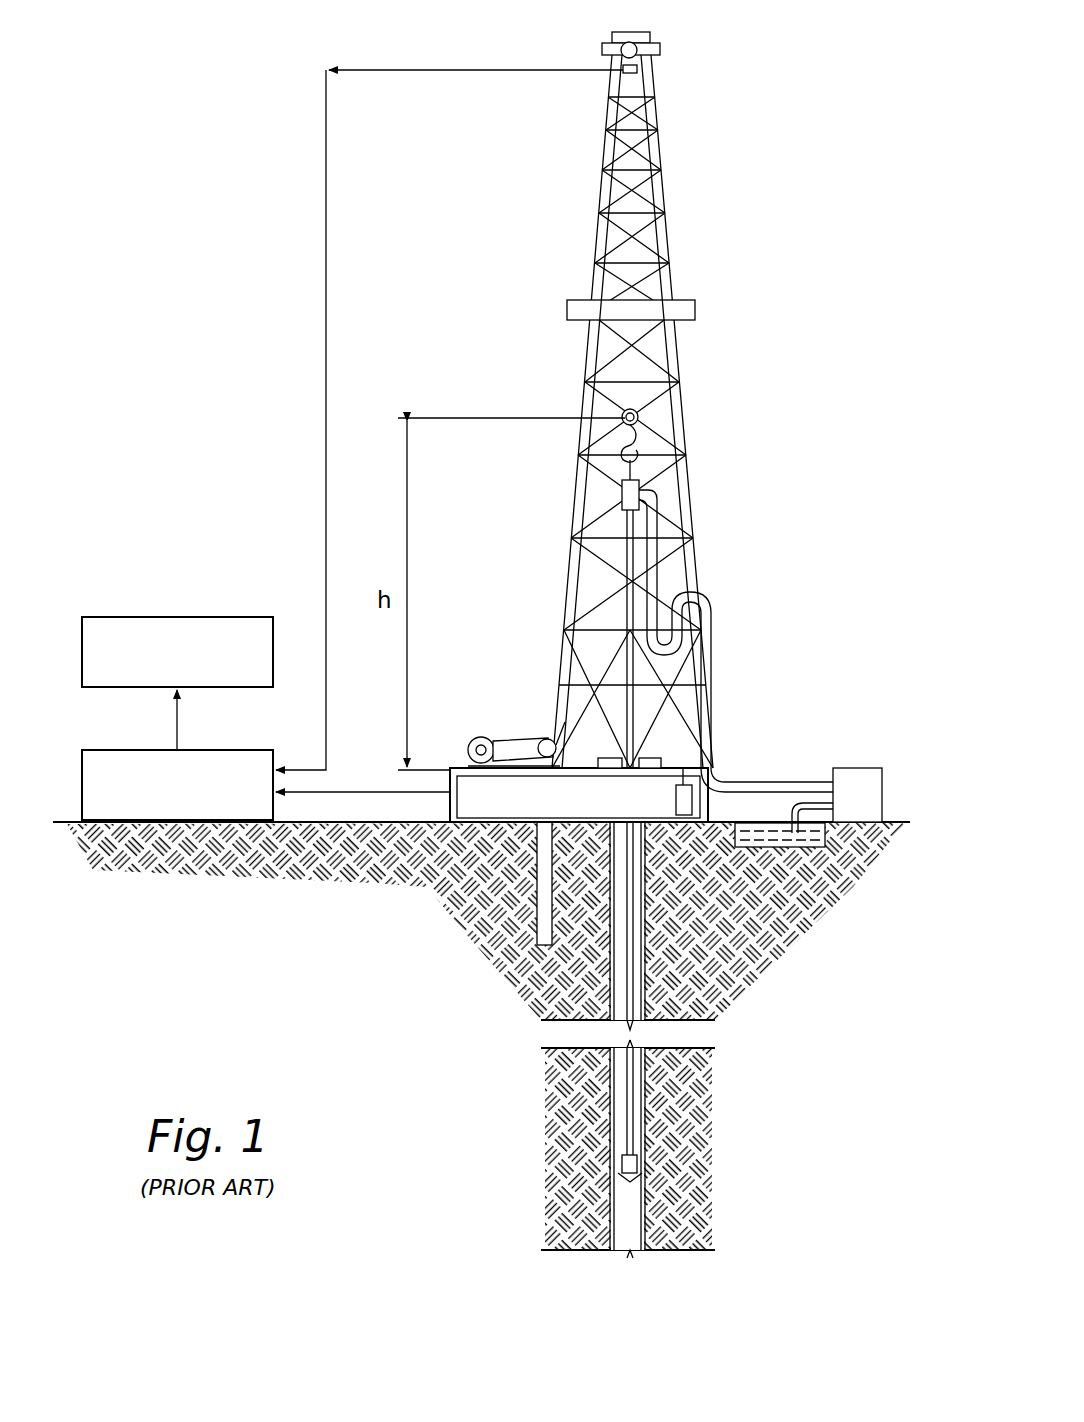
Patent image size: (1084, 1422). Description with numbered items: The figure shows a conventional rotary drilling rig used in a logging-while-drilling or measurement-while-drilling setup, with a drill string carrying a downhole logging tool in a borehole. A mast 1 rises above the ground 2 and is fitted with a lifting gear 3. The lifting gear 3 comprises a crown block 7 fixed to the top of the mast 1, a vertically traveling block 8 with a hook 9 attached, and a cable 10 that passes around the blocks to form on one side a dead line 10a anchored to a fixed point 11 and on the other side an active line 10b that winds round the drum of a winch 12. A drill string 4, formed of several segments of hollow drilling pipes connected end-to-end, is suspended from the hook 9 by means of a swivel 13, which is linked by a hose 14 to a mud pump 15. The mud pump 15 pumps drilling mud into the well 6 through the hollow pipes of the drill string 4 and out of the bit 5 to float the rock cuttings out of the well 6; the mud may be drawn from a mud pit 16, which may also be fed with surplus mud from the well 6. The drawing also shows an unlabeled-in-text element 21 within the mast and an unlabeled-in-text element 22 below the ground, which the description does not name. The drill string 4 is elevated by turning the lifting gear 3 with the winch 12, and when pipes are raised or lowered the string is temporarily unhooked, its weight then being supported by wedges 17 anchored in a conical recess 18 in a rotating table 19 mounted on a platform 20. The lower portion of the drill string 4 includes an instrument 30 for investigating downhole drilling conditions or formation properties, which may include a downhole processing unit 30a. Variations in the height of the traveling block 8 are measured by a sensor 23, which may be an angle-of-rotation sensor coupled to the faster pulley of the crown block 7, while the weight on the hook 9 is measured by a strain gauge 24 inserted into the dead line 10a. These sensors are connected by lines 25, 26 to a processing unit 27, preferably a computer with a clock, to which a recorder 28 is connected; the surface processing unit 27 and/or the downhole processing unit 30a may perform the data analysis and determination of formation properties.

The mast 1 is at (681, 360).
The ground 2 is at (486, 826).
The lifting gear 3 is at (622, 375).
The drill string 4 is at (633, 1073).
The bit 5 is at (629, 1163).
The well 6 is at (633, 1222).
The crown block 7 is at (624, 44).
The traveling block 8 is at (621, 414).
The hook 9 is at (614, 447).
The cable 10 is at (656, 255).
The dead line 10a is at (680, 572).
The active line 10b is at (582, 566).
The fixed point 11 is at (684, 824).
The winch 12 is at (516, 740).
The swivel 13 is at (621, 496).
The hose 14 is at (722, 607).
The mud pump 15 is at (860, 768).
The mud pit 16 is at (765, 836).
The wedges 17 is at (610, 758).
The conical recess 18 is at (635, 763).
The rotating table 19 is at (598, 763).
The platform 20 is at (670, 766).
The kelly 21 is at (612, 607).
The pile 22 is at (548, 826).
The sensor 23 is at (637, 68).
The strain gauge 24 is at (692, 800).
The line 25 is at (444, 420).
The line 26 is at (348, 792).
The processing unit 27 is at (150, 750).
The recorder 28 is at (150, 617).
The instrument 30 is at (633, 1131).
The processing unit 30a is at (633, 1103).